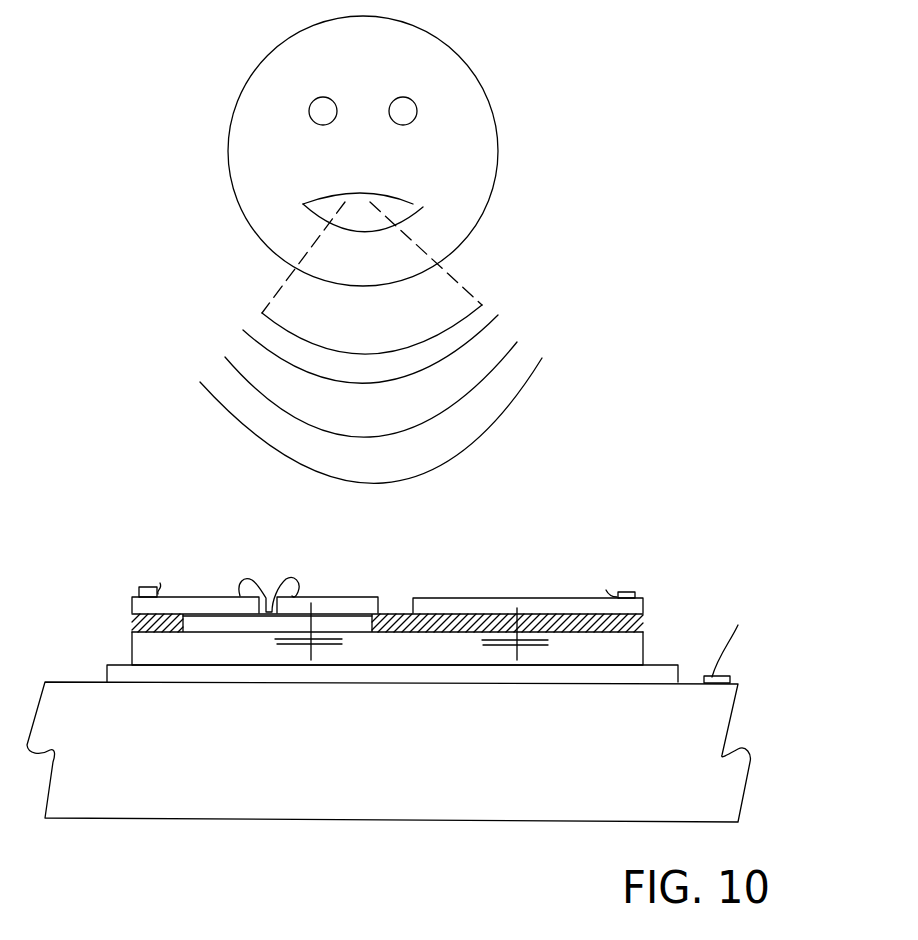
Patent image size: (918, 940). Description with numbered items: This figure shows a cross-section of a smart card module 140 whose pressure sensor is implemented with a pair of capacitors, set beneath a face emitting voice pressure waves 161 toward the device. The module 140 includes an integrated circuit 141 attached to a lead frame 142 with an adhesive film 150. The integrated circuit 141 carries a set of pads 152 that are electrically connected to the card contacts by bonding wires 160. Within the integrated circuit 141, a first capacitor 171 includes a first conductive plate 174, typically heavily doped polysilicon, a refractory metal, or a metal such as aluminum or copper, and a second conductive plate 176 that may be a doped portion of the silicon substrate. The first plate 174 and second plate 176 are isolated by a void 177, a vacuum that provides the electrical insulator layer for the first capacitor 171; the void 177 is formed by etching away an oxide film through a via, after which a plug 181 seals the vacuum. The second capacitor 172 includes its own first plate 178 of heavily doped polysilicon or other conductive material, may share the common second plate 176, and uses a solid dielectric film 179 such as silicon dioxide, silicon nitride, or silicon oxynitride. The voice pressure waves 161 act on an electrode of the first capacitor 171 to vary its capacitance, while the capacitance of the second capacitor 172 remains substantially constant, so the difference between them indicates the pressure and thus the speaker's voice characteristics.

The module 140 is at (737, 558).
The integrated circuit 141 is at (87, 623).
The lead frame 142 is at (718, 807).
The adhesive film 150 is at (108, 675).
The pads 152 is at (160, 583).
The bonding wires 160 is at (138, 556).
The voice pressure waves 161 is at (467, 410).
The first capacitor 171 is at (312, 647).
The second capacitor 172 is at (517, 648).
The first conductive plate 174 is at (333, 605).
The second conductive plate 176 is at (178, 645).
The void 177 is at (212, 622).
The first plate 178 is at (495, 612).
The dielectric film 179 is at (637, 622).
The plug 181 is at (263, 603).